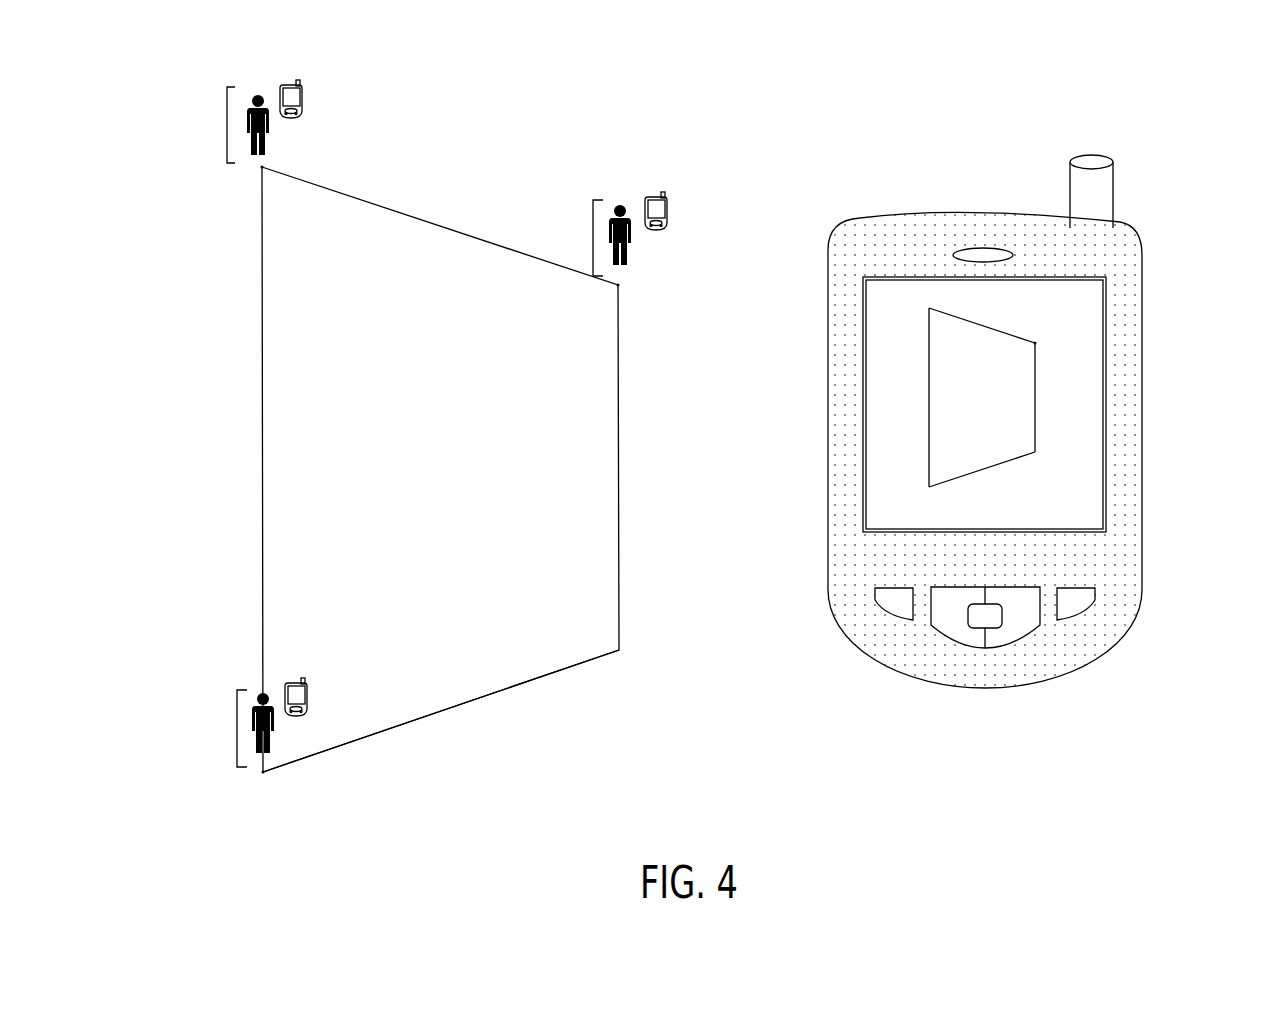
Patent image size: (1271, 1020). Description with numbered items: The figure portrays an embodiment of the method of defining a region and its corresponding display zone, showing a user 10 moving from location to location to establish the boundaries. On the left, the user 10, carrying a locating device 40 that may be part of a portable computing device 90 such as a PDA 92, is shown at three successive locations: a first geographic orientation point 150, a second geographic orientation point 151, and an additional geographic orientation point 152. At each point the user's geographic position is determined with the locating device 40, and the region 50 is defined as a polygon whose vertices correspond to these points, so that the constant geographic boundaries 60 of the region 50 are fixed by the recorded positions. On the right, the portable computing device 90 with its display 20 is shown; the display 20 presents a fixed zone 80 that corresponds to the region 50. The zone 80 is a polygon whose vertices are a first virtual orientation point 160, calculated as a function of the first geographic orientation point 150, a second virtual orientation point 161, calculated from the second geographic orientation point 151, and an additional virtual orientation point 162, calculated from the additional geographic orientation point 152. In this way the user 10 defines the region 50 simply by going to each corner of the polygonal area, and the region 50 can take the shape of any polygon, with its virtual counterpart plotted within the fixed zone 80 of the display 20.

The user 10 is at (227, 125).
The display 20 is at (1062, 372).
The locating device 40 is at (652, 190).
The region 50 is at (548, 588).
The constant geographic boundaries 60 is at (528, 683).
The fixed zone 80 is at (1021, 445).
The portable computing device 90 is at (1002, 490).
The PDA 92 is at (1132, 690).
The first geographic orientation point 150 is at (263, 772).
The second geographic orientation point 151 is at (262, 167).
The additional geographic orientation point 152 is at (618, 285).
The first virtual orientation point 160 is at (929, 487).
The second virtual orientation point 161 is at (929, 308).
The additional virtual orientation point 162 is at (1035, 343).